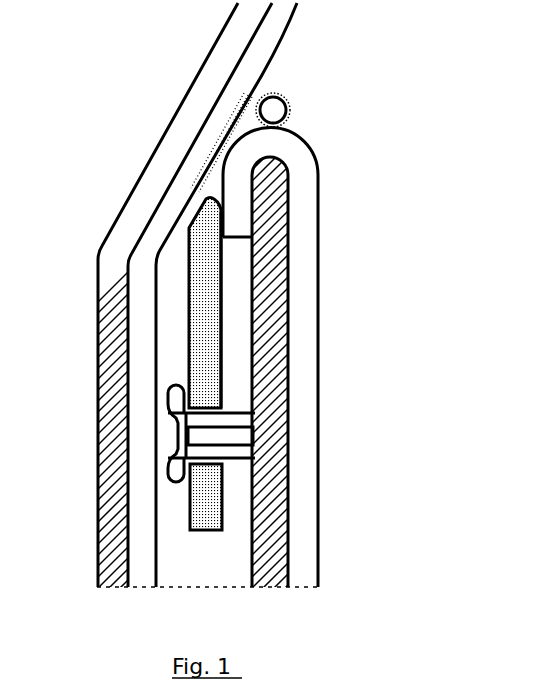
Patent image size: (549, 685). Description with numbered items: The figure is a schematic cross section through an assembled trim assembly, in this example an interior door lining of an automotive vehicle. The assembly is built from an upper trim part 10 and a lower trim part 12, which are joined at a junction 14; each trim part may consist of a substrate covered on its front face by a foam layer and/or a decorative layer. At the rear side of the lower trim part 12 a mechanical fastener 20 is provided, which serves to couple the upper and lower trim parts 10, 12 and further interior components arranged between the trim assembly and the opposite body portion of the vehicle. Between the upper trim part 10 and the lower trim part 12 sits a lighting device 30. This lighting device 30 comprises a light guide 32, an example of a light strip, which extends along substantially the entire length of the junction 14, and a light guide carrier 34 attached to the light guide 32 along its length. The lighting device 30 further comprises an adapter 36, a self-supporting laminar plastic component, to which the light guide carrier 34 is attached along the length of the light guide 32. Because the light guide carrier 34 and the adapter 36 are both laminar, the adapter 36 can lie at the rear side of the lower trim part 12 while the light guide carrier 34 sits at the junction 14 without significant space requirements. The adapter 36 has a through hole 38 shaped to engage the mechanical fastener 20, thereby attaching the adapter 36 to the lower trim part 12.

The upper trim part 10 is at (290, 41).
The lower trim part 12 is at (326, 210).
The junction 14 is at (244, 119).
The mechanical fastener 20 is at (232, 410).
The lighting device 30 is at (233, 320).
The light guide 32 is at (280, 107).
The light guide carrier 34 is at (235, 188).
The adapter 36 is at (188, 339).
The through hole 38 is at (212, 460).